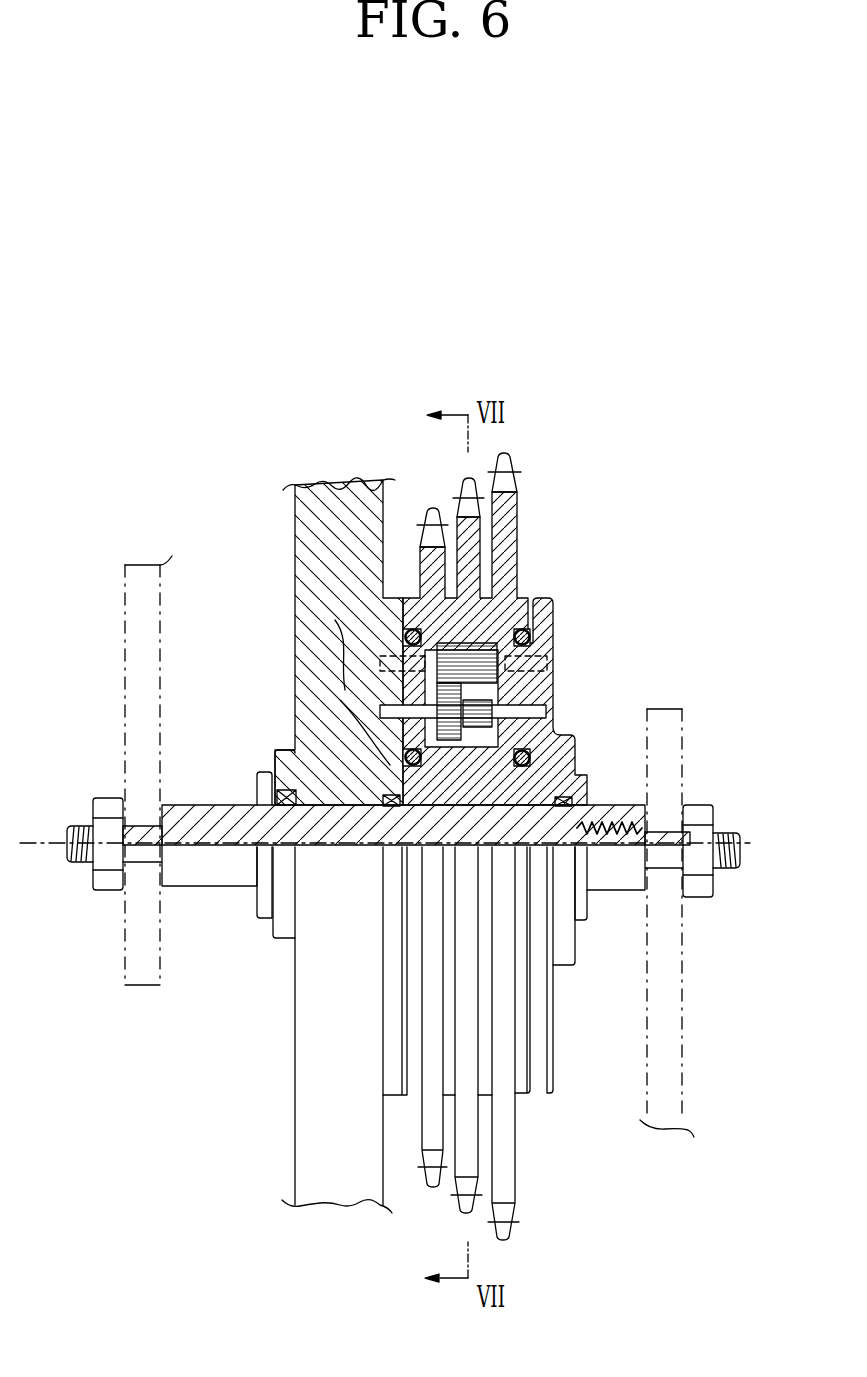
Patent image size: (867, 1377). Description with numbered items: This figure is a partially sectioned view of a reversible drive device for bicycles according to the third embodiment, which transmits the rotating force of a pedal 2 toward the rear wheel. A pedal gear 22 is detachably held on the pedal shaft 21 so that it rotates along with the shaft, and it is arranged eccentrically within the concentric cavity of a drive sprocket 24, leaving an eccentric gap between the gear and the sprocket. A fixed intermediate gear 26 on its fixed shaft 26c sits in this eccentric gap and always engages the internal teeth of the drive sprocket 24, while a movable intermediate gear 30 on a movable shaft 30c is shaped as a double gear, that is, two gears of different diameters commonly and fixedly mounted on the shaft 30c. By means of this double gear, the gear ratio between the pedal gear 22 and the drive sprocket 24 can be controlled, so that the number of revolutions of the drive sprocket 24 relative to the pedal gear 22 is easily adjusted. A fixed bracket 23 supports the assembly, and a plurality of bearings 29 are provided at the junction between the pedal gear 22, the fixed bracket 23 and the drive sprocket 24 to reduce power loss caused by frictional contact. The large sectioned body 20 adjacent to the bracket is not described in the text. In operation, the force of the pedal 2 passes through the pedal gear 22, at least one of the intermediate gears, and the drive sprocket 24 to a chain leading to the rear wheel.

The pedal 2 is at (125, 565).
The brake disk 20 is at (295, 525).
The pedal shaft 21 is at (202, 805).
The pedal gear 22 is at (336, 705).
The fixed bracket 23 is at (540, 600).
The drive sprocket 24 is at (420, 528).
The fixed intermediate gear 26 is at (515, 628).
The fixed shaft 26c is at (553, 682).
The bearings 29 is at (335, 620).
The movable intermediate gear 30 is at (488, 715).
The movable shaft 30c is at (555, 712).